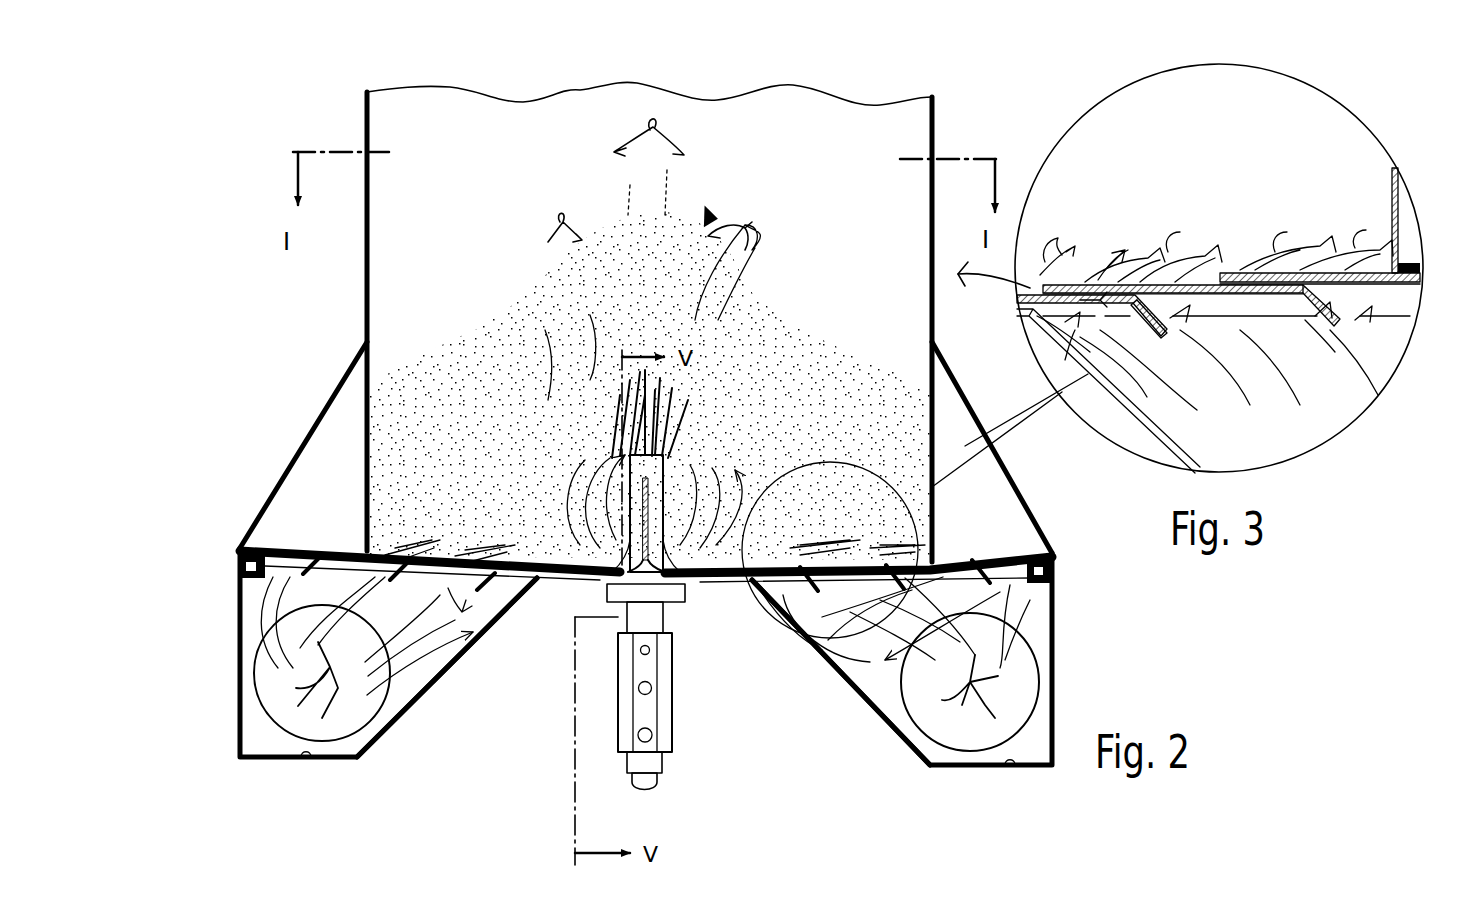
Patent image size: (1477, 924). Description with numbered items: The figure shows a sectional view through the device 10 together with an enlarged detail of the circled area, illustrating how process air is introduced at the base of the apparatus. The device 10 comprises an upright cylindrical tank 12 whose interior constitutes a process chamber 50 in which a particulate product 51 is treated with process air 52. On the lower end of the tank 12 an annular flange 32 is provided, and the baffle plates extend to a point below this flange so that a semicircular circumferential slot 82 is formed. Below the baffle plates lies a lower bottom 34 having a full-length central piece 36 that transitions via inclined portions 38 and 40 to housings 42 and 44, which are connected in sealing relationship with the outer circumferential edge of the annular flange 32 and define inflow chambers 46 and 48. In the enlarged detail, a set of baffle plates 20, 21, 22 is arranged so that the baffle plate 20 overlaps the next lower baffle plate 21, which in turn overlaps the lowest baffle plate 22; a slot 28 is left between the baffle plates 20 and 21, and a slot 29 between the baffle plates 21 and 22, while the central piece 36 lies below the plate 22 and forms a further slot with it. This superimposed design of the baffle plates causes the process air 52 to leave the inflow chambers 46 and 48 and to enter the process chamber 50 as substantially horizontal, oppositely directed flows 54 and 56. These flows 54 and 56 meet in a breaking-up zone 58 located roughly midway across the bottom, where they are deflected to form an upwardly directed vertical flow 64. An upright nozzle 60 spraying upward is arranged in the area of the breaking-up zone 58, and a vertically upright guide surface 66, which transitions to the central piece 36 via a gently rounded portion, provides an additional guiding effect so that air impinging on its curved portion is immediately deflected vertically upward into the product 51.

In FIG. 2, the device 10 is at (268, 142).
In FIG. 2, the upright cylindrical tank 12 is at (366, 254).
In FIG. 3, the baffle plate 20 is at (1338, 272).
In FIG. 3, the baffle plate 21 is at (1178, 283).
In FIG. 3, the baffle plate 22 is at (1084, 280).
In FIG. 3, the slot 28 is at (1215, 265).
In FIG. 3, the slot 29 is at (1042, 285).
In FIG. 2, the annular flange 32 is at (296, 556).
In FIG. 3, the annular flange 32 is at (1408, 264).
In FIG. 2, the lower bottom 34 is at (905, 757).
In FIG. 2, the central piece 36 is at (712, 588).
In FIG. 3, the central piece 36 is at (1027, 305).
In FIG. 2, the inclined portion 38 is at (866, 700).
In FIG. 2, the inclined portion 40 is at (447, 682).
In FIG. 2, the housing 42 is at (1008, 765).
In FIG. 2, the housing 44 is at (308, 762).
In FIG. 2, the inflow chamber 46 is at (1042, 634).
In FIG. 2, the inflow chamber 48 is at (247, 606).
In FIG. 2, the process chamber 50 is at (818, 167).
In FIG. 3, the process chamber 50 is at (1294, 141).
In FIG. 2, the particulate product 51 is at (498, 340).
In FIG. 2, the process air 52 is at (290, 690).
In FIG. 2, the horizontal flow 54 is at (466, 540).
In FIG. 2, the horizontal flow 56 is at (826, 545).
In FIG. 2, the breaking-up zone 58 is at (590, 445).
In FIG. 2, the upright nozzle 60 is at (712, 470).
In FIG. 2, the vertical flow 64 is at (728, 270).
In FIG. 2, the guide surface 66 is at (583, 592).
In FIG. 3, the semicircular circumferential slot 82 is at (1396, 250).